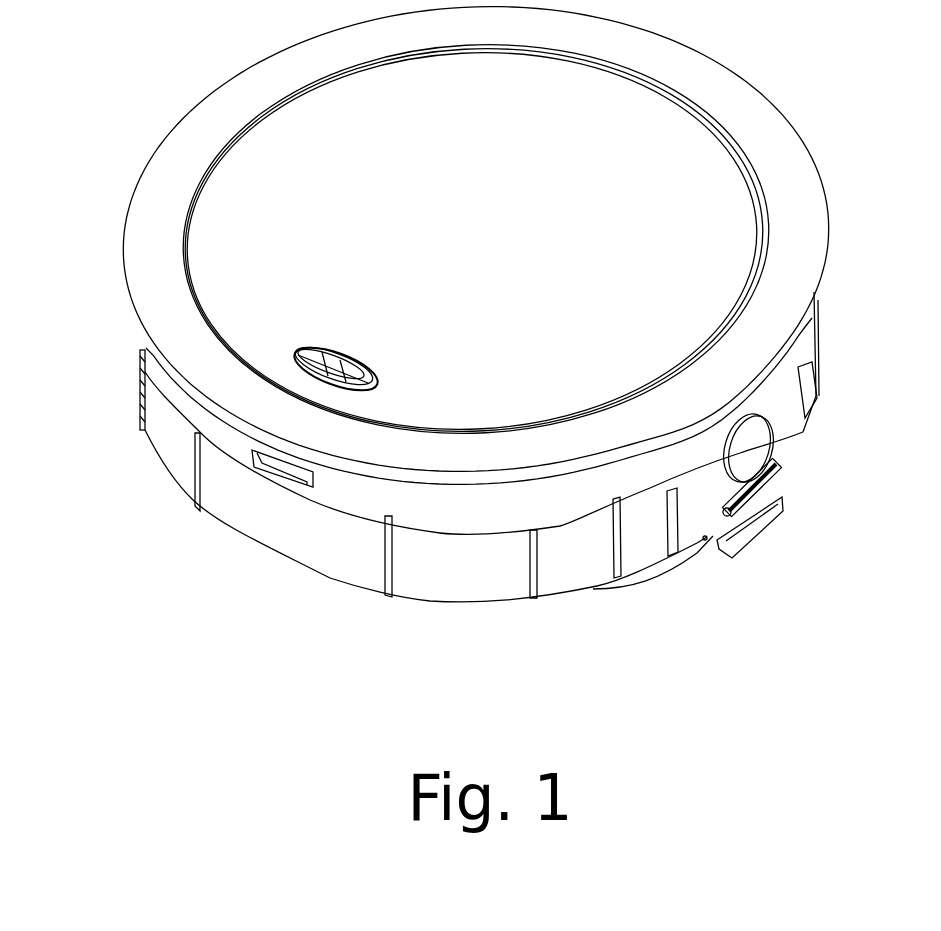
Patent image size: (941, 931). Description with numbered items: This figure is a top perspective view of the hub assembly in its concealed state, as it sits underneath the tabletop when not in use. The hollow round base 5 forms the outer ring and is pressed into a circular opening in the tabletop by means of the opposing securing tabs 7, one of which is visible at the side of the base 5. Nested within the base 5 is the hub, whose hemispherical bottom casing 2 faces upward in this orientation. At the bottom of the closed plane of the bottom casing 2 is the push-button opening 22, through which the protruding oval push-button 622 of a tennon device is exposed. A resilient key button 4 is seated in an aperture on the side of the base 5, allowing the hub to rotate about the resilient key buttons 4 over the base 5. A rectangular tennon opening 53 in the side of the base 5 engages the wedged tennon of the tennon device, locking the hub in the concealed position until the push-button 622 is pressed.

The base 5 is at (770, 137).
The bottom casing 2 is at (528, 215).
The push-button opening 22 is at (377, 373).
The protruding oval push-button 622 is at (323, 353).
The tennon opening 53 is at (270, 472).
The resilient key button 4 is at (753, 445).
The securing tab 7 is at (757, 532).